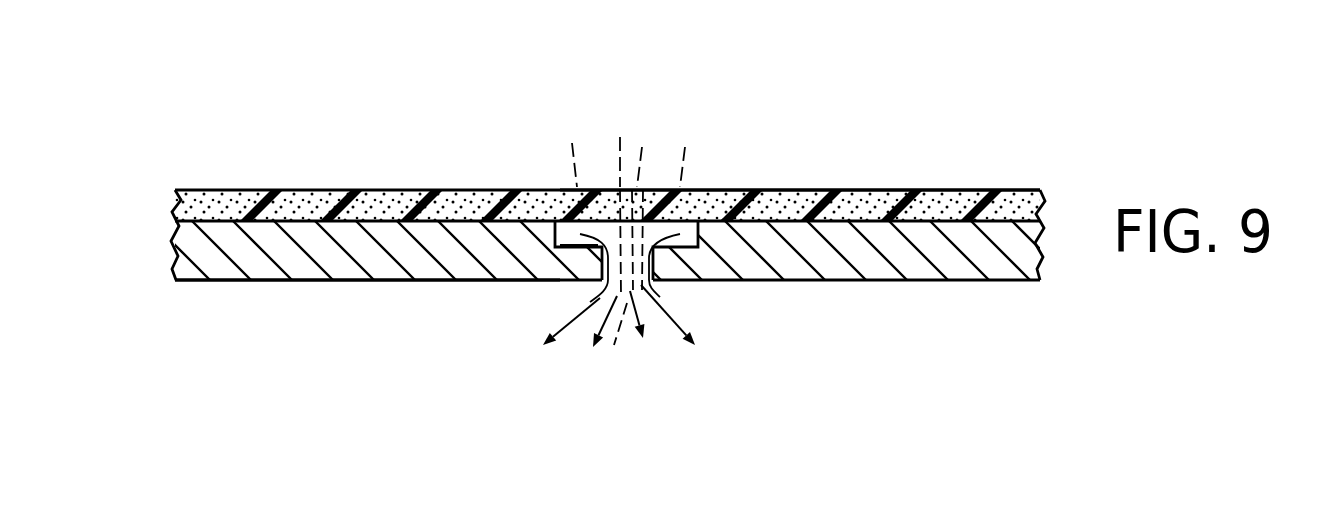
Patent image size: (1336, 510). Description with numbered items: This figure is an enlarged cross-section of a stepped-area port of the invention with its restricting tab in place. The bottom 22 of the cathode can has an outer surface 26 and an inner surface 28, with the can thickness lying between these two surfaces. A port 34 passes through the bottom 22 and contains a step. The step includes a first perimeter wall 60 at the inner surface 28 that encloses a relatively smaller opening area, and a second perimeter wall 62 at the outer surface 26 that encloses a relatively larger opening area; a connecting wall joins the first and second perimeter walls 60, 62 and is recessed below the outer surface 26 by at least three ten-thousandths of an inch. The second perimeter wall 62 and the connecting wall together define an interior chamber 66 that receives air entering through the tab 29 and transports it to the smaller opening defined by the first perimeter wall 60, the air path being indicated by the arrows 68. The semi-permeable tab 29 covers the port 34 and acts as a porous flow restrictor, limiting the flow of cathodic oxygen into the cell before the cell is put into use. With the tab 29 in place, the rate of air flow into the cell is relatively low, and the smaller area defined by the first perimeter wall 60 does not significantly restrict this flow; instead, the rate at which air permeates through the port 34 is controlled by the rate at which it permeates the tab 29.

The bottom of the cathode can 22 is at (264, 294).
The outer surface 26 is at (303, 218).
The inner surface 28 is at (852, 281).
The semi-permeable tab 29 is at (958, 190).
The port 34 is at (698, 190).
The first perimeter wall 60 is at (600, 297).
The second perimeter wall 62 is at (590, 243).
The interior chamber 66 is at (575, 240).
The arrows 68 is at (614, 345).